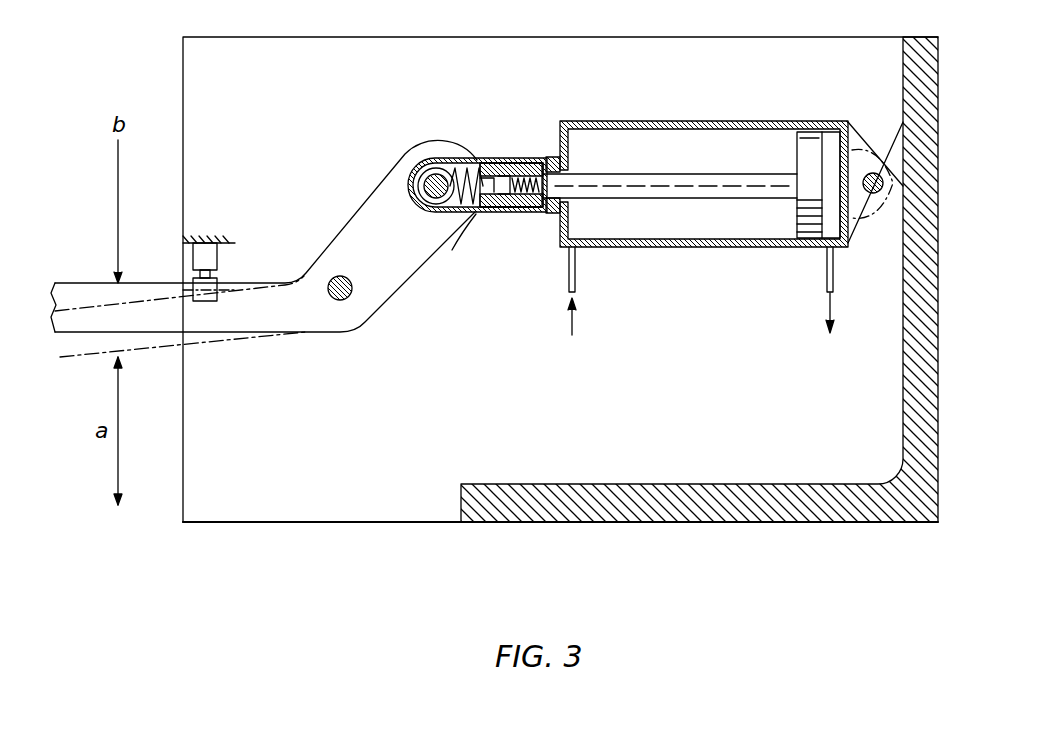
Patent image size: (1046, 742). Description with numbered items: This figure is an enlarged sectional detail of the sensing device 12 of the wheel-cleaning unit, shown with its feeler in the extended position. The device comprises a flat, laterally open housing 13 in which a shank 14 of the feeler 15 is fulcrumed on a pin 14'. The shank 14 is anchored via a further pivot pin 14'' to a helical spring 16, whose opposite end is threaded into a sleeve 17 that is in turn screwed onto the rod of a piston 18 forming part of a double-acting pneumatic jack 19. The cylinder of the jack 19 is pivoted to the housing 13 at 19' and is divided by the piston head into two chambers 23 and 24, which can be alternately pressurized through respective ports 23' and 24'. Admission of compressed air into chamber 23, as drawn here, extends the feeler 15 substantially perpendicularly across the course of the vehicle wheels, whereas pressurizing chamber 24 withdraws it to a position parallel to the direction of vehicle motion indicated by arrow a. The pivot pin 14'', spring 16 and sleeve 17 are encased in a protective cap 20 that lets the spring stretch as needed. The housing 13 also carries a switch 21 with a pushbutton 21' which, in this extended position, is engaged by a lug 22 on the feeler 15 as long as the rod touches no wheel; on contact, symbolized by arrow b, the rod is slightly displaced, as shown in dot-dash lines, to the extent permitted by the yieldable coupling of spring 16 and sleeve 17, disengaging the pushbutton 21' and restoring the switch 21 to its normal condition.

The sensing device 12 is at (493, 526).
The housing 13 is at (668, 488).
The shank 14 is at (264, 236).
The pin 14' is at (363, 278).
The pivot pin 14'' is at (431, 150).
The feeler 15 is at (163, 333).
The helical spring 16 is at (455, 166).
The sleeve 17 is at (519, 160).
The piston 18 is at (624, 172).
The double-acting pneumatic jack 19 is at (704, 213).
The pivot 19' is at (875, 199).
The protective cap 20 is at (459, 245).
The switch 21 is at (228, 255).
The pushbutton 21' is at (173, 262).
The lug 22 is at (217, 291).
The chamber 23 is at (704, 104).
The port 23' is at (596, 291).
The chamber 24 is at (825, 154).
The port 24' is at (803, 290).